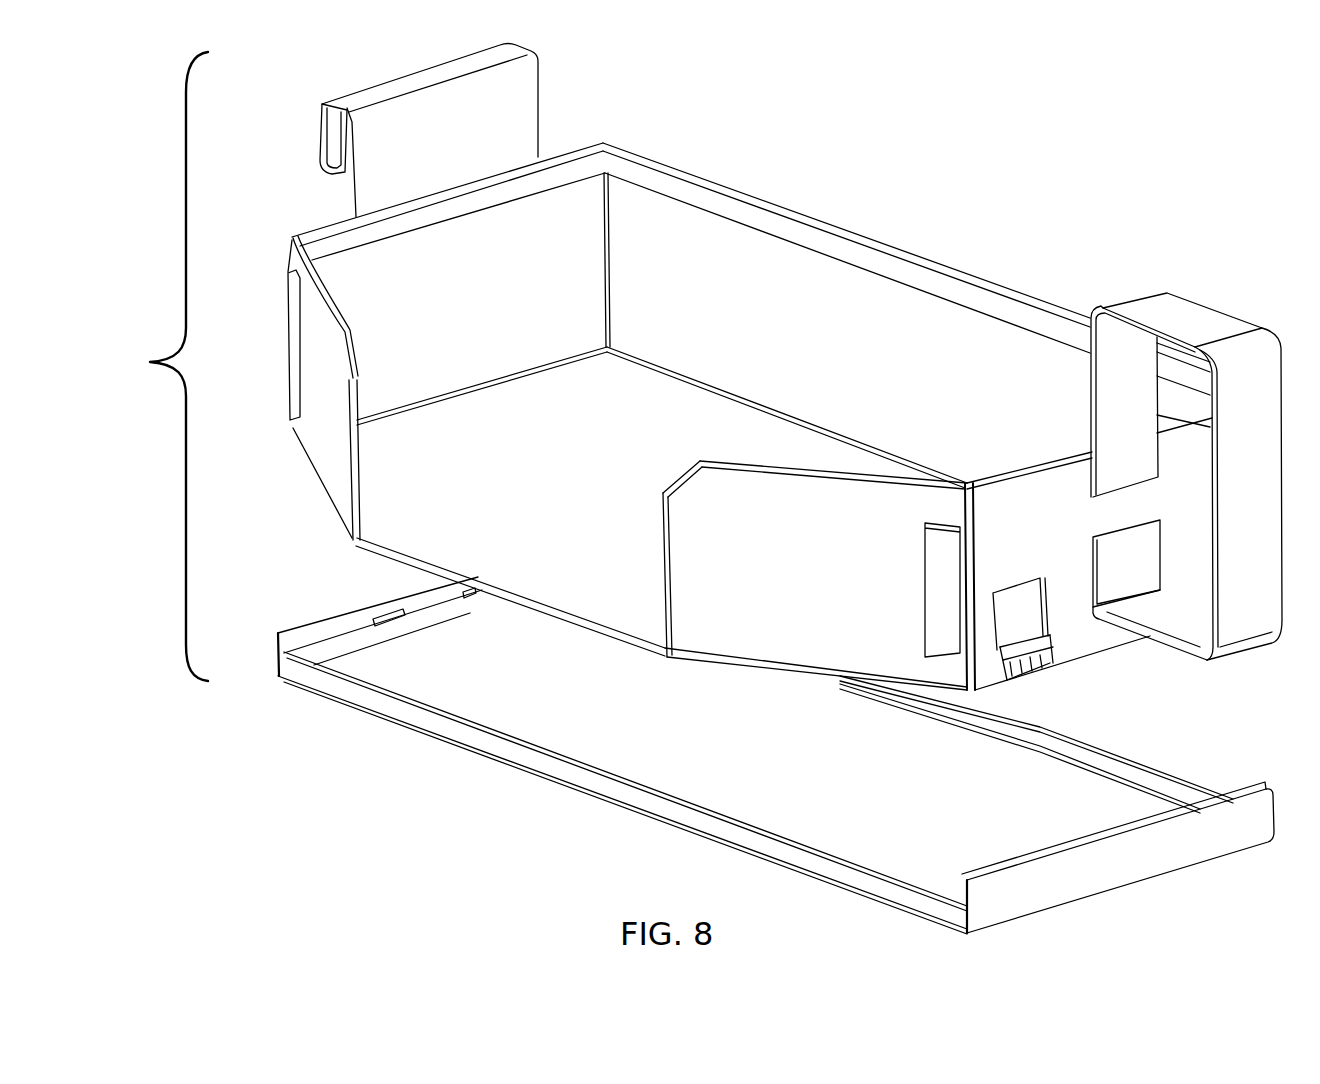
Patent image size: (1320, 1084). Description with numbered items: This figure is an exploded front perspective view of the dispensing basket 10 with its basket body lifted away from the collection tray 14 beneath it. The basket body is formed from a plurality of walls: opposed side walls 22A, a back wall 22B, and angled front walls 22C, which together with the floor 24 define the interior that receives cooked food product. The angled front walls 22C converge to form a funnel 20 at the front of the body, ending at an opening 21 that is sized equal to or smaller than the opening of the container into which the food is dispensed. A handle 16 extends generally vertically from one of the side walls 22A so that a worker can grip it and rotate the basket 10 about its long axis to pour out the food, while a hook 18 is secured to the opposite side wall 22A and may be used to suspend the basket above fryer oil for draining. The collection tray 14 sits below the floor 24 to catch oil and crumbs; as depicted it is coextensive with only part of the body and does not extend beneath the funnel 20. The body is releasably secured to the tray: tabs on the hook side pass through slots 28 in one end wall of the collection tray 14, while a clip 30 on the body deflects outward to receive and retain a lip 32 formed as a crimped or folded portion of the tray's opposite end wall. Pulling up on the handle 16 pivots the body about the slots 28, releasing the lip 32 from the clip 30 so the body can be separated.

The dispensing basket 10 is at (163, 366).
The collection tray 14 is at (776, 771).
The handle 16 is at (1210, 338).
The hook 18 is at (396, 122).
The funnel 20 is at (724, 391).
The opening 21 is at (360, 513).
The side wall 22A is at (561, 217).
The back wall 22B is at (833, 286).
The angled front wall 22C is at (312, 337).
The floor 24 is at (540, 463).
The slot 28 is at (386, 617).
The clip 30 is at (1035, 597).
The lip 32 is at (1000, 877).